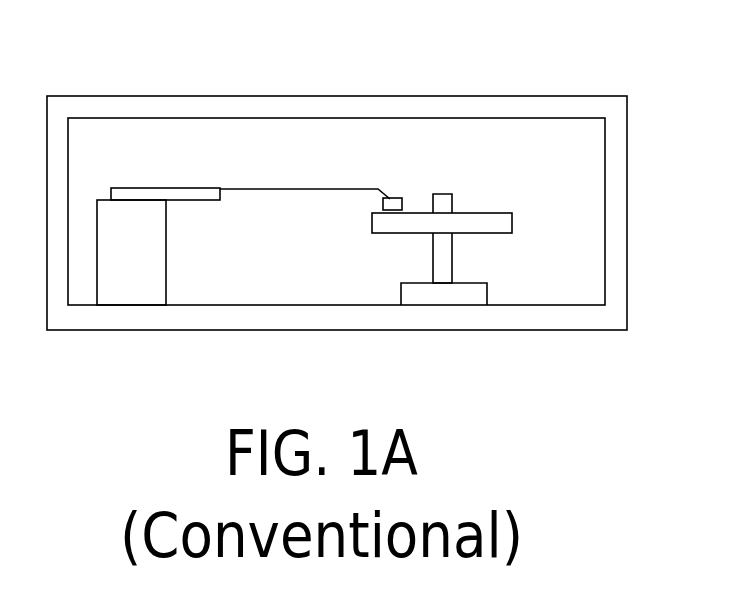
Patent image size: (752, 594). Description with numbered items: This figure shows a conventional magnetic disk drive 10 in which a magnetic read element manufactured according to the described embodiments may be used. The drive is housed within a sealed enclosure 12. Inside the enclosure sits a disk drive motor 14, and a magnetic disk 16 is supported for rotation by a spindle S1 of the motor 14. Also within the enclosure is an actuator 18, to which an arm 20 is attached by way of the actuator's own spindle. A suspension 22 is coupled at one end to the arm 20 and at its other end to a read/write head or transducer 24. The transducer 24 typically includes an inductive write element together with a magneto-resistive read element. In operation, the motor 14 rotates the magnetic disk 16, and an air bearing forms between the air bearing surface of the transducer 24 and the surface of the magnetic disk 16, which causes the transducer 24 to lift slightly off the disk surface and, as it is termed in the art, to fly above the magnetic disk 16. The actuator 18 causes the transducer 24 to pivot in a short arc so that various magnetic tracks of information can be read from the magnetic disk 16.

The magnetic disk drive 10 is at (367, 85).
The sealed enclosure 12 is at (285, 323).
The disk drive motor 14 is at (402, 300).
The magnetic disk 16 is at (512, 218).
The actuator 18 is at (157, 288).
The arm 20 is at (183, 194).
The suspension 22 is at (323, 190).
The transducer 24 is at (393, 204).
The spindle S1 is at (445, 203).